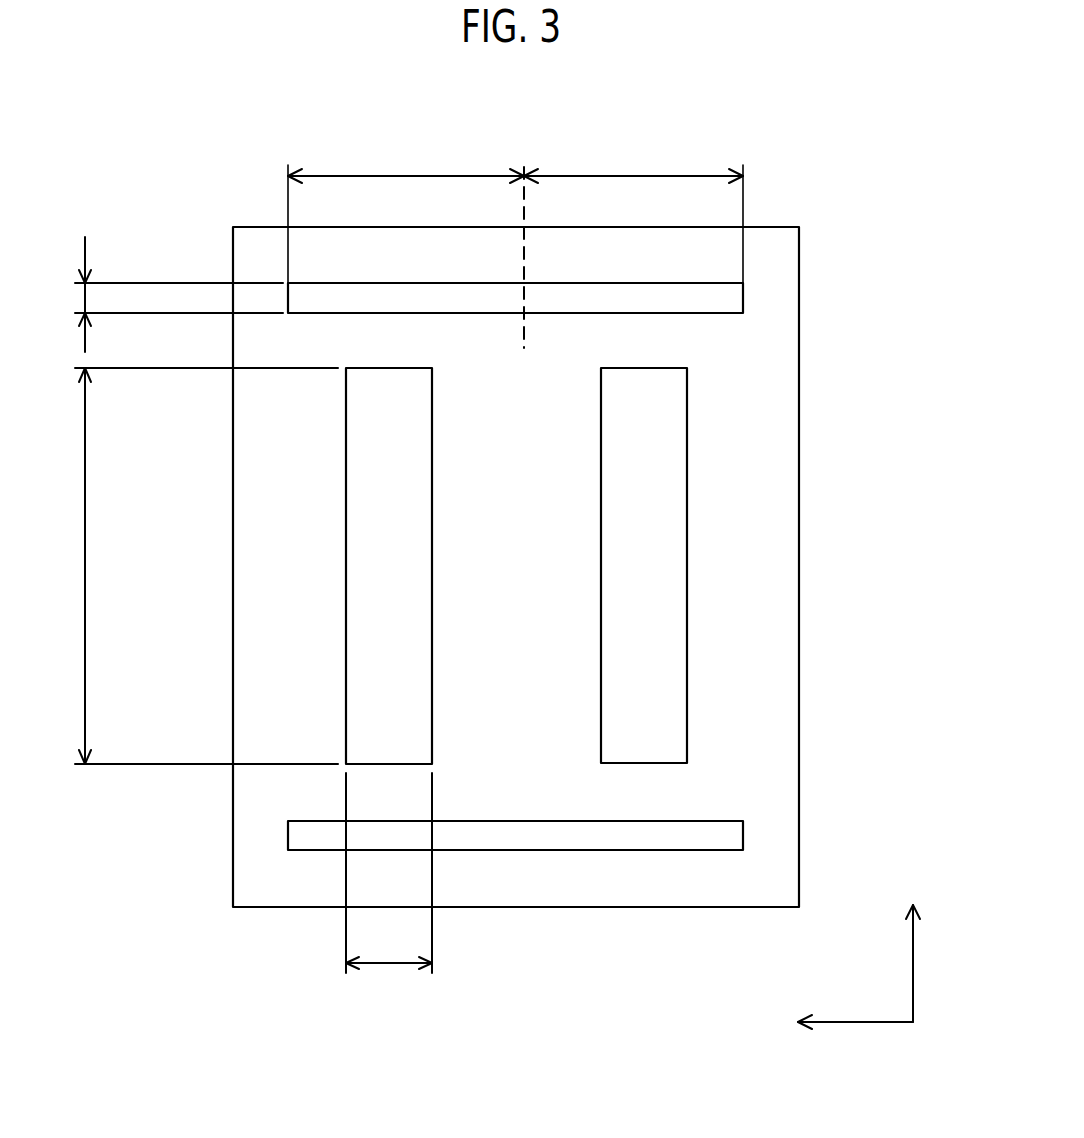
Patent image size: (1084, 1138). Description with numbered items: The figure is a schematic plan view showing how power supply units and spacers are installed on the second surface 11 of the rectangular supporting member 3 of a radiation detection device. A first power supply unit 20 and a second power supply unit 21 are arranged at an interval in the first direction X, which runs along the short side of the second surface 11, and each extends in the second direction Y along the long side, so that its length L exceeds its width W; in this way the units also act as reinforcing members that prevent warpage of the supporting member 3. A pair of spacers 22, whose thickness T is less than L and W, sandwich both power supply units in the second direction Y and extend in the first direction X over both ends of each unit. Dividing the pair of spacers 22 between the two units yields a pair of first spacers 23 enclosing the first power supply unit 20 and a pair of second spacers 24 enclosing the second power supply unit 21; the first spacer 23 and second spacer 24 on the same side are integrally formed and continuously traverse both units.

The supporting member 3 is at (810, 226).
The second surface 11 is at (786, 297).
The first power supply unit 20 is at (367, 564).
The second power supply unit 21 is at (655, 558).
The pair of spacers 22 is at (663, 155).
The pair of first spacers 23 is at (406, 211).
The pair of second spacers 24 is at (633, 211).